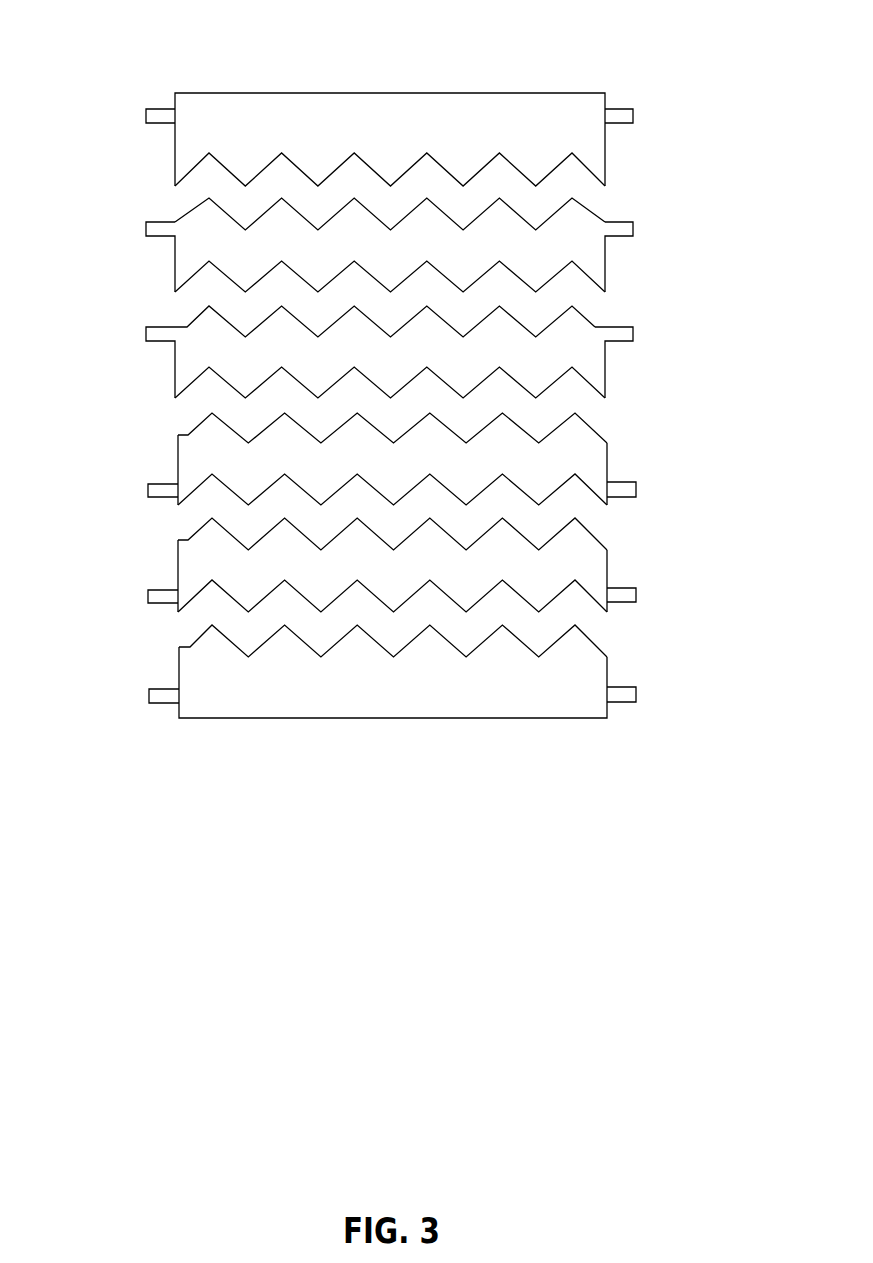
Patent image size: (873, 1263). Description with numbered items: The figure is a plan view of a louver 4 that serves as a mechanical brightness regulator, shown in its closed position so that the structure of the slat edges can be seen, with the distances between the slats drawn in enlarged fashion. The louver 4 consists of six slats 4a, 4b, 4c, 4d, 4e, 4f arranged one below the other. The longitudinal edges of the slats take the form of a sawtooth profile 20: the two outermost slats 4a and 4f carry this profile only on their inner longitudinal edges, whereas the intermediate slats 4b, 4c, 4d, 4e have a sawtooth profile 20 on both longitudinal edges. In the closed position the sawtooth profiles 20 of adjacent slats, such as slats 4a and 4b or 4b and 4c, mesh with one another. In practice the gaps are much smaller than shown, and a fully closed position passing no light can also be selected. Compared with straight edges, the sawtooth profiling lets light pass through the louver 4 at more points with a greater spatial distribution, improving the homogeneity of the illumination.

The louver 4 is at (88, 63).
The slat 4a is at (664, 137).
The slat 4b is at (650, 254).
The slat 4c is at (668, 365).
The slat 4d is at (672, 462).
The slat 4e is at (677, 551).
The slat 4f is at (662, 662).
The sawtooth profile 20 is at (197, 168).